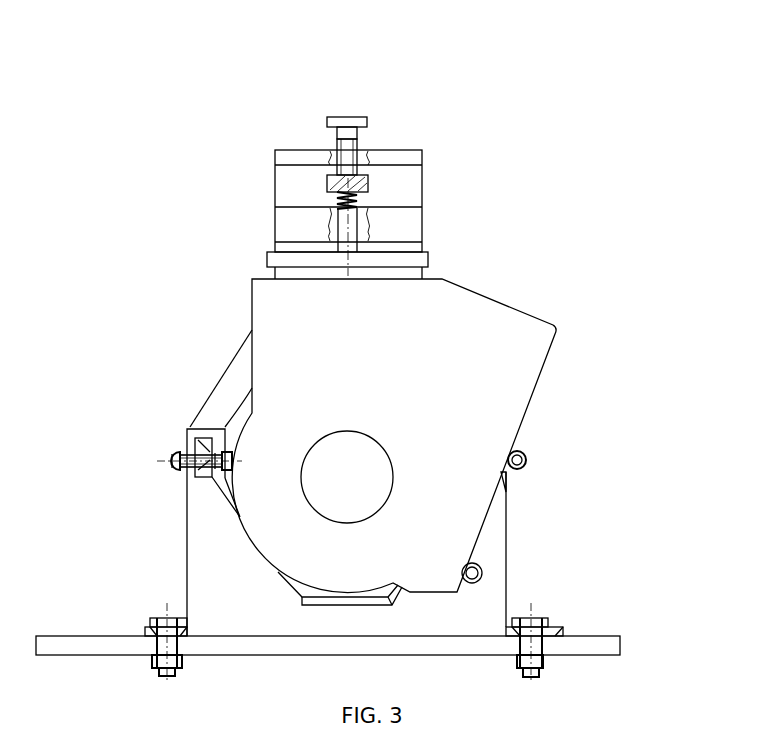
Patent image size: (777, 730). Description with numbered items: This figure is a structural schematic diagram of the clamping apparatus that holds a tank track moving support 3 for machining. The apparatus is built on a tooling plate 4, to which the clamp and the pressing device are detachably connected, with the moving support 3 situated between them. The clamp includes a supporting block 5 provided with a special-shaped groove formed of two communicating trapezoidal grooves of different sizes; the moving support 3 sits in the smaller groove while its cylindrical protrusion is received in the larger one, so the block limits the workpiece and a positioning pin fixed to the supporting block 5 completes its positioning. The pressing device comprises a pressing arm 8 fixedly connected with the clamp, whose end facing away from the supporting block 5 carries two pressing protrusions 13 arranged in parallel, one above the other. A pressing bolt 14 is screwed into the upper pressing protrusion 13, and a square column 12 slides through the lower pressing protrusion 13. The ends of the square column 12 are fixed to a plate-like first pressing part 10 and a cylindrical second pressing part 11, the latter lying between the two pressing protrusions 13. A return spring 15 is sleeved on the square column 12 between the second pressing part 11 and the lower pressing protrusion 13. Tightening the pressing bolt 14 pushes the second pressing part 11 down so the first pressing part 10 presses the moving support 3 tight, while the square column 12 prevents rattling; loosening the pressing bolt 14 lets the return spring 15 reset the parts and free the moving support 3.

The moving support 3 is at (478, 374).
The tooling plate 4 is at (588, 647).
The supporting block 5 is at (480, 612).
The pressing arm 8 is at (233, 398).
The first pressing part 10 is at (395, 260).
The second pressing part 11 is at (367, 180).
The square column 12 is at (347, 225).
The pressing protrusions 13 is at (310, 220).
The pressing bolt 14 is at (340, 122).
The return spring 15 is at (337, 200).